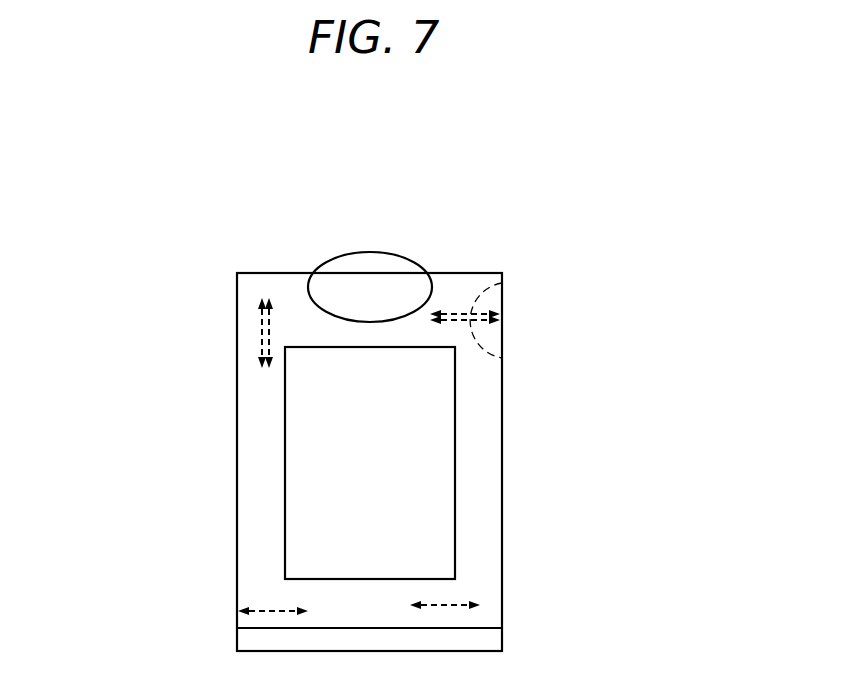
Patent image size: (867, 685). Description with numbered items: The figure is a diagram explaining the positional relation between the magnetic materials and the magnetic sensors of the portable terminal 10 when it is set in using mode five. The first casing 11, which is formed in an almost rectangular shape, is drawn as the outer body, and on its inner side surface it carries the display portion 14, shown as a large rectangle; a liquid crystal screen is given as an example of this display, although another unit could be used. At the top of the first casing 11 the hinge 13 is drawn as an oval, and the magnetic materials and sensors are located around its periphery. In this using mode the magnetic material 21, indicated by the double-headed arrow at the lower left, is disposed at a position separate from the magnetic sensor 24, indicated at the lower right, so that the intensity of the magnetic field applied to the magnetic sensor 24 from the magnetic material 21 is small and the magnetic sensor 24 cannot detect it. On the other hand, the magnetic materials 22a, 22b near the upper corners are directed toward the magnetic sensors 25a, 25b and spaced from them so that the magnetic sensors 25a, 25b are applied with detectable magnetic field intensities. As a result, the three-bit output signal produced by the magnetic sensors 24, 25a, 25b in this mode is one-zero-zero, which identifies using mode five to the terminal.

The portable terminal 10 is at (520, 182).
The first casing 11 is at (237, 497).
The hinge 13 is at (355, 268).
The display portion 14 is at (428, 485).
The magnetic material 21 is at (237, 617).
The magnetic material 22a is at (503, 283).
The magnetic material 22b is at (262, 302).
The magnetic sensor 24 is at (481, 607).
The magnetic sensor 25a is at (262, 355).
The magnetic sensor 25b is at (503, 358).